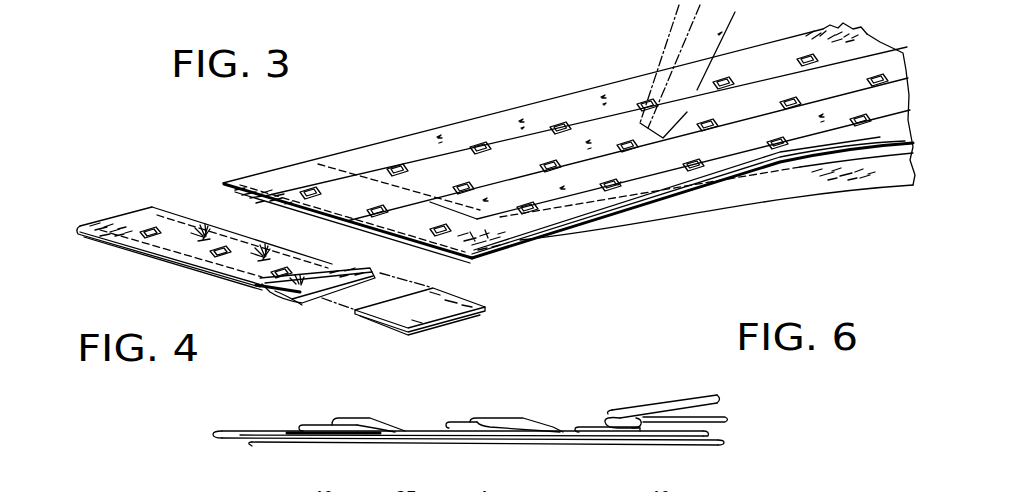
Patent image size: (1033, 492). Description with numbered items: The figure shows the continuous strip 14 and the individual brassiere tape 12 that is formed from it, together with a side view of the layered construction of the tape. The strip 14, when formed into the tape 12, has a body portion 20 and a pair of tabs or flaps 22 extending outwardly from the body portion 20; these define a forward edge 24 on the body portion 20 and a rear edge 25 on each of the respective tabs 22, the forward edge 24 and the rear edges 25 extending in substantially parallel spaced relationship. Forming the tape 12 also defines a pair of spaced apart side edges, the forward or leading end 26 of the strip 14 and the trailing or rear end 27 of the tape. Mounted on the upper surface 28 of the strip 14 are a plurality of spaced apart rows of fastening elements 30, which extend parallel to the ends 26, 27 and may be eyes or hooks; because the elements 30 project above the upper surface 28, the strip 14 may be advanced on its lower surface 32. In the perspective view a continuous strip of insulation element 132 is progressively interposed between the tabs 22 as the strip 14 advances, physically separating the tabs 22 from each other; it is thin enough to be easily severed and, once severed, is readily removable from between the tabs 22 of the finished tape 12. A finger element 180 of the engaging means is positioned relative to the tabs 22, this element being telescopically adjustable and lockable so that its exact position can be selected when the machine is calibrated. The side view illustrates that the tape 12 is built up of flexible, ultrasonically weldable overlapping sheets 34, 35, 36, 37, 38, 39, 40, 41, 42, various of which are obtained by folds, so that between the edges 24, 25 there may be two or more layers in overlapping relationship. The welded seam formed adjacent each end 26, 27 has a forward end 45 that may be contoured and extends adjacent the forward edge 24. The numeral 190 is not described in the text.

In FIG. 4, the tape 12 is at (130, 205).
In FIG. 6, the tape 12 is at (207, 434).
In FIG. 3, the continuous strip 14 is at (502, 108).
In FIG. 4, the body portion 20 is at (172, 264).
In FIG. 6, the body portion 20 is at (413, 447).
In FIG. 4, the tabs or flaps 22 is at (283, 305).
In FIG. 6, the tabs or flaps 22 is at (693, 397).
In FIG. 3, the forward edge 24 is at (456, 120).
In FIG. 4, the forward edge 24 is at (100, 218).
In FIG. 6, the forward edge 24 is at (215, 440).
In FIG. 3, the rear edge 25 is at (503, 253).
In FIG. 4, the rear edge 25 is at (308, 303).
In FIG. 6, the rear edge 25 is at (717, 400).
In FIG. 3, the forward end 26 is at (328, 216).
In FIG. 4, the forward end 26 is at (216, 277).
In FIG. 3, the rear end 27 is at (330, 168).
In FIG. 4, the rear end 27 is at (186, 220).
In FIG. 3, the upper surface 28 is at (416, 146).
In FIG. 4, the upper surface 28 is at (113, 247).
In FIG. 3, the fastening elements 30 is at (305, 180).
In FIG. 4, the fastening elements 30 is at (157, 224).
In FIG. 6, the fastening elements 30 is at (307, 425).
In FIG. 6, the lower surface 32 is at (473, 448).
In FIG. 6, the sheet 34 is at (322, 445).
In FIG. 6, the sheet 35 is at (255, 442).
In FIG. 6, the sheet 36 is at (558, 433).
In FIG. 6, the sheet 37 is at (252, 428).
In FIG. 6, the sheet 38 is at (356, 431).
In FIG. 6, the sheet 39 is at (395, 430).
In FIG. 6, the sheet 40 is at (515, 420).
In FIG. 6, the sheet 41 is at (712, 402).
In FIG. 6, the sheet 42 is at (630, 405).
In FIG. 4, the forward end of seam 45 is at (78, 236).
In FIG. 3, the insulation element 132 is at (813, 196).
In FIG. 4, the insulation element 132 is at (470, 311).
In FIG. 6, the insulation element 132 is at (727, 420).
In FIG. 3, the finger element 180 is at (660, 50).
In FIG. 3, the web section 190 is at (720, 138).